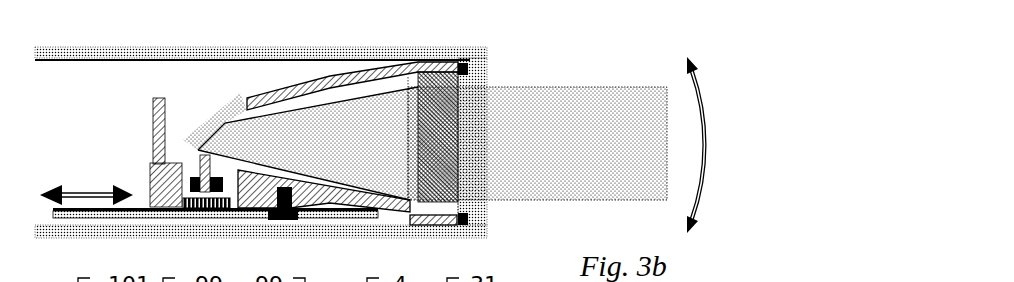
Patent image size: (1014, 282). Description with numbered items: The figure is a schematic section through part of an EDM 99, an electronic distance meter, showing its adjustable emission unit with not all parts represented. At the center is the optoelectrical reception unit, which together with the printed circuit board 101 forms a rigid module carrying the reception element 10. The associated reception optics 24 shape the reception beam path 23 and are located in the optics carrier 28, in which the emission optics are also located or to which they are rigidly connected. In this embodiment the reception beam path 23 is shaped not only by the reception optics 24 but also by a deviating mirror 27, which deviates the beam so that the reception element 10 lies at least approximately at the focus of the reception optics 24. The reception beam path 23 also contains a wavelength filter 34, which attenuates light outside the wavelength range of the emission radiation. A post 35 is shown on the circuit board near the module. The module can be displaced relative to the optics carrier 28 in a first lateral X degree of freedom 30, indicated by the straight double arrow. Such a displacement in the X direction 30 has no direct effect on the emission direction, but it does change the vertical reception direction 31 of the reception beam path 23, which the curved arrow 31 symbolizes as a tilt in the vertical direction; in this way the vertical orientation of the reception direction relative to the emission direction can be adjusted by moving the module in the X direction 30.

The EDM 99 is at (143, 28).
The wavelength filter 34 is at (135, 132).
The reception element 10 is at (115, 152).
The printed circuit board 101 is at (207, 170).
The first lateral X degree of freedom 30 is at (86, 180).
The deviating mirror 27 is at (224, 109).
The optics carrier 28 is at (353, 117).
The post 35 is at (346, 115).
The reception optics 24 is at (459, 112).
The reception beam path 23 is at (432, 122).
The vertical reception direction 31 is at (660, 138).